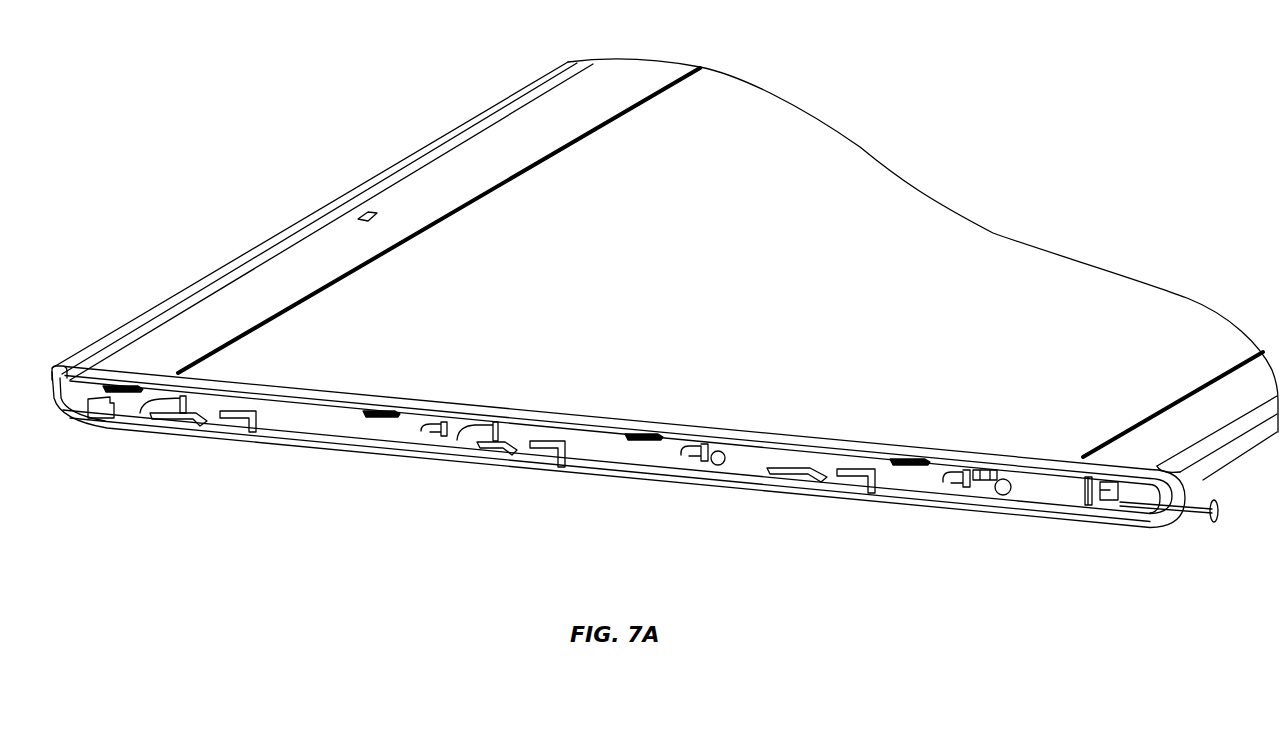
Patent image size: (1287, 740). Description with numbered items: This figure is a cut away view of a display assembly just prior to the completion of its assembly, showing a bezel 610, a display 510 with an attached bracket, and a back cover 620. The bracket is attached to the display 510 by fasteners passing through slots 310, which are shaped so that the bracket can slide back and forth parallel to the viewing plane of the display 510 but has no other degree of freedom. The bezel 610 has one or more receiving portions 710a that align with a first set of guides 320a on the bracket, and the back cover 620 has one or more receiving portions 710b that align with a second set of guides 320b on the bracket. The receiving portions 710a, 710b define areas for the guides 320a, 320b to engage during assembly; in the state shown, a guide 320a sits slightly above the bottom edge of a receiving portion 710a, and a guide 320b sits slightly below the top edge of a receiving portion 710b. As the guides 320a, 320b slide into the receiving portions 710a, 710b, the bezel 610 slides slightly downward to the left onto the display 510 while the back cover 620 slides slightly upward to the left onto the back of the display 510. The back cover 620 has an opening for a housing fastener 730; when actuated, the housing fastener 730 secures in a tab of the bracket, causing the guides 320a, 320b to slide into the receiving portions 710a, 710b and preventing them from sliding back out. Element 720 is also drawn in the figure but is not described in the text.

The slot 310 is at (197, 400).
The first set of guides 320a is at (118, 383).
The second set of guides 320b is at (170, 420).
The display 510 is at (650, 272).
The bezel 610 is at (258, 272).
The back cover 620 is at (1085, 520).
The receiving portion 710a is at (125, 405).
The receiving portion 710b is at (253, 430).
The pin boss 720 is at (726, 454).
The housing fastener 730 is at (1212, 523).